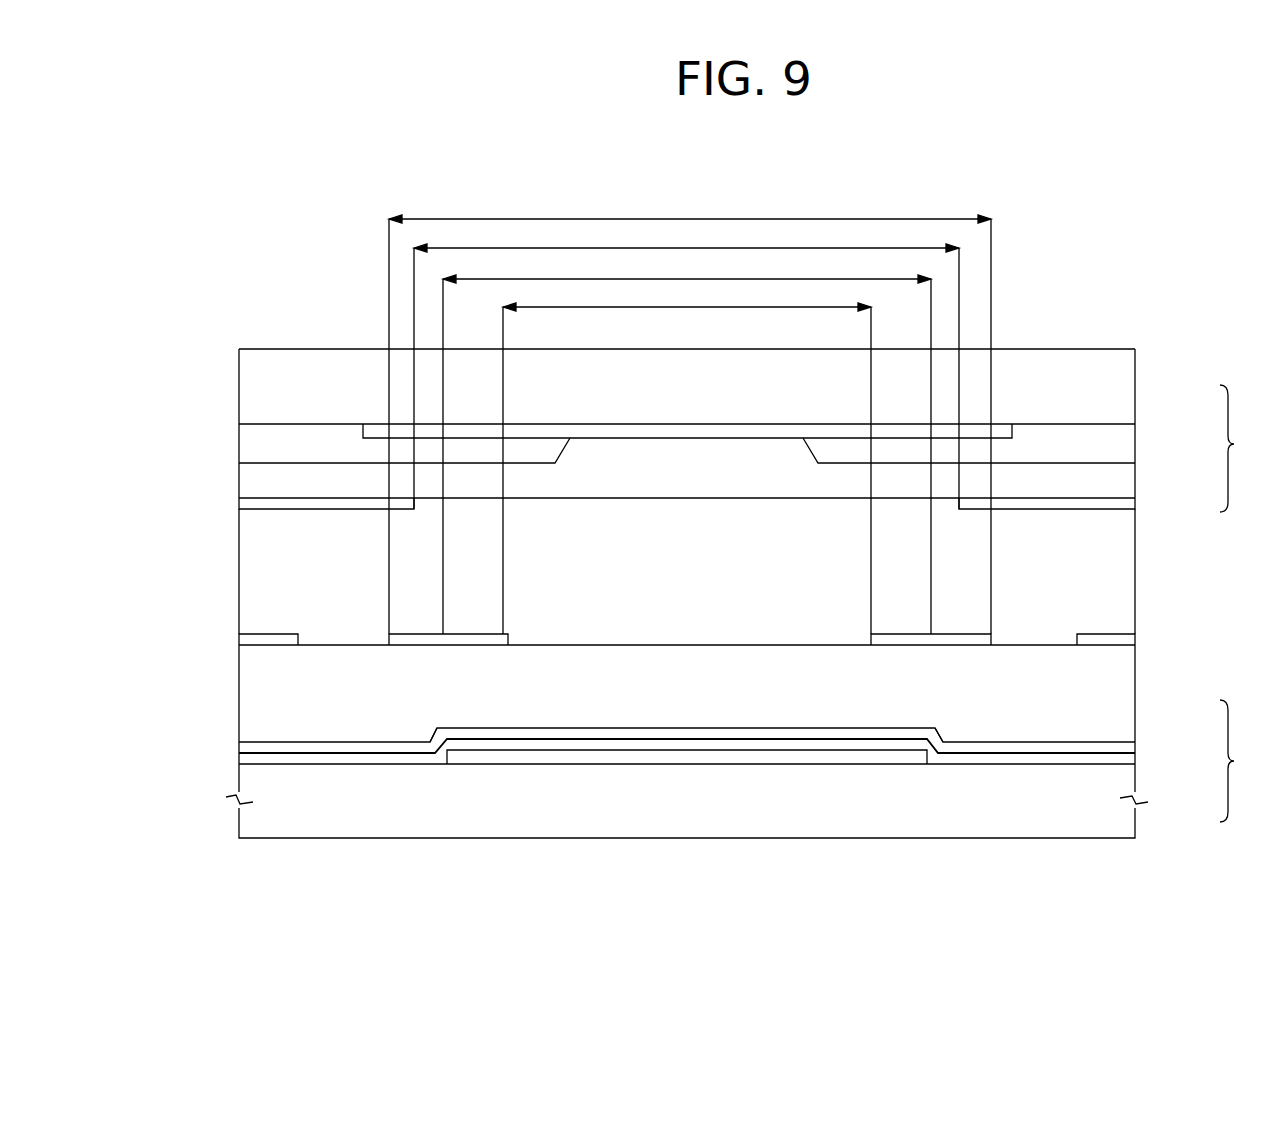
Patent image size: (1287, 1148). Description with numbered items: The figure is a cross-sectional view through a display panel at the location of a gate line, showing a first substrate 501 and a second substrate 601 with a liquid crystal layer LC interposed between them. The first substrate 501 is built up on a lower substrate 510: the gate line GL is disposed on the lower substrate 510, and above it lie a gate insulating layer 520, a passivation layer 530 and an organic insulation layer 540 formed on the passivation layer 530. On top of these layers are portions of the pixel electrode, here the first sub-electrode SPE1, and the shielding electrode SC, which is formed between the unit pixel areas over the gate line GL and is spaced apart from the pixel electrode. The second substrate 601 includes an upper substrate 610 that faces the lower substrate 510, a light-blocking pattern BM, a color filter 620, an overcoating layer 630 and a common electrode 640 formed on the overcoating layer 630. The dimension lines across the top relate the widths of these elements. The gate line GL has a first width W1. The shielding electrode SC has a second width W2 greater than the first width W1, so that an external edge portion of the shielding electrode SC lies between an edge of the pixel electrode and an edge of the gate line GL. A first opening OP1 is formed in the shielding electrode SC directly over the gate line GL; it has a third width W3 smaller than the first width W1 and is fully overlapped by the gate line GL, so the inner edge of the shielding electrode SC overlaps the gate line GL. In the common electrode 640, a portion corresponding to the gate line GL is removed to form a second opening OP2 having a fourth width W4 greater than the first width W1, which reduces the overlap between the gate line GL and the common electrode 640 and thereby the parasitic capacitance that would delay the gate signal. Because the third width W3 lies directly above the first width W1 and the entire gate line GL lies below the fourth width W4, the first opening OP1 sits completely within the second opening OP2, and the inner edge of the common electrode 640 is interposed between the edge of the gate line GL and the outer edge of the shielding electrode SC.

The light-blocking pattern BM is at (998, 424).
The upper substrate 610 is at (1130, 392).
The color filter 620 is at (1130, 444).
The overcoating layer 630 is at (1130, 480).
The common electrode 640 is at (1130, 503).
The second substrate 601 is at (1249, 448).
The liquid crystal layer LC is at (1140, 512).
The first sub-electrode SPE1 is at (243, 637).
The organic insulation layer 540 is at (1130, 703).
The passivation layer 530 is at (1130, 745).
The gate insulating layer 520 is at (1130, 757).
The lower substrate 510 is at (1130, 812).
The first substrate 501 is at (1249, 761).
The gate line GL is at (603, 757).
The shielding electrode SC is at (450, 640).
The first opening OP1 is at (677, 639).
The second opening OP2 is at (767, 502).
The first width W1 is at (687, 444).
The second width W2 is at (690, 413).
The third width W3 is at (687, 458).
The fourth width W4 is at (686, 367).